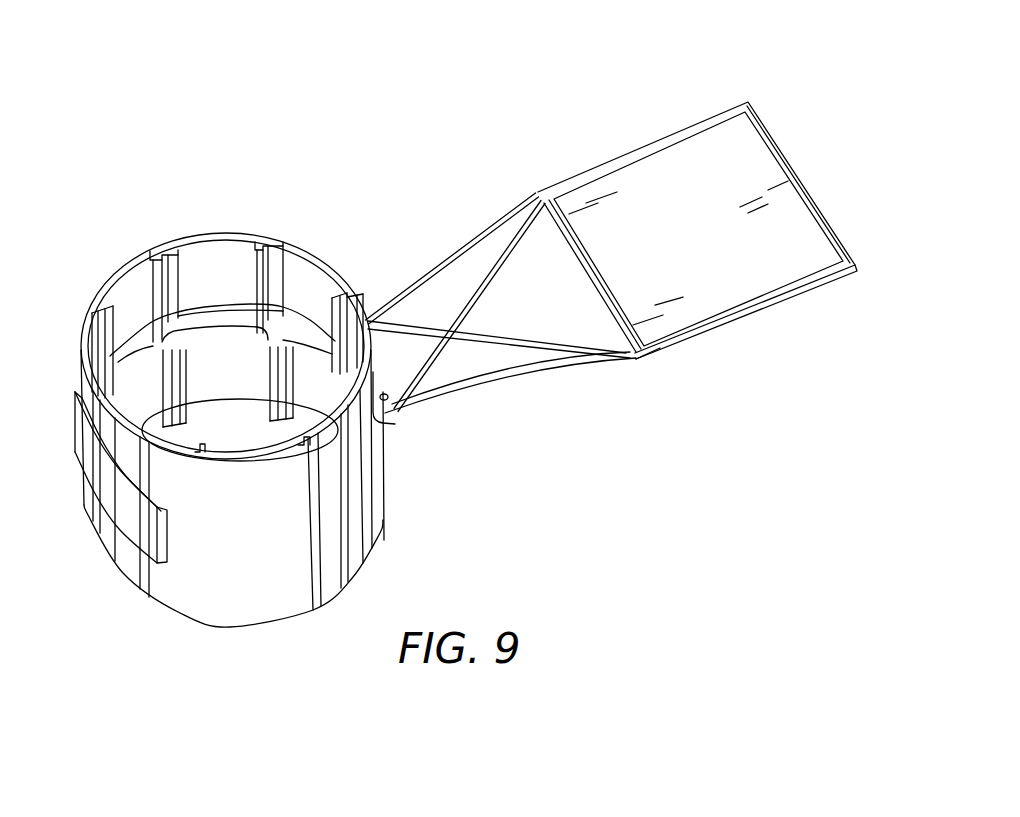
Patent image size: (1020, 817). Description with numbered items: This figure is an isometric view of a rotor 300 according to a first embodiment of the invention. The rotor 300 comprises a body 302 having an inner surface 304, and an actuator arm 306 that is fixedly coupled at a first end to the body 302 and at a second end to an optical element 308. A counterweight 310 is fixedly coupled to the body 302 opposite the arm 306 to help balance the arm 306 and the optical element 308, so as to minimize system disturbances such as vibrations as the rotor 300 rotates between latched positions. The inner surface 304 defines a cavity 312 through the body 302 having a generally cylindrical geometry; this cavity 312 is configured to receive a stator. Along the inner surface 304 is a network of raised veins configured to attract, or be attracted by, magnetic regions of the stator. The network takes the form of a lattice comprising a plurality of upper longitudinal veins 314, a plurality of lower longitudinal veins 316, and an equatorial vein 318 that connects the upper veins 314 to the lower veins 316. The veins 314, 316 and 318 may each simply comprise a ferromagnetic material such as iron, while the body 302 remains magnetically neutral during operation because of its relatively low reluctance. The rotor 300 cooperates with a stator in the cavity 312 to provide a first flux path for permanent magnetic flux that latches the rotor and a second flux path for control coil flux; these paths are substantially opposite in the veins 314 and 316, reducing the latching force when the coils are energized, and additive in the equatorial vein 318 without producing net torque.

The rotor 300 is at (786, 70).
The body 302 is at (281, 620).
The inner surface 304 is at (217, 240).
The actuator arm 306 is at (538, 377).
The optical element 308 is at (675, 233).
The counterweight 310 is at (86, 477).
The cavity 312 is at (218, 447).
The upper longitudinal veins 314 is at (266, 243).
The lower longitudinal veins 316 is at (188, 413).
The equatorial vein 318 is at (227, 335).